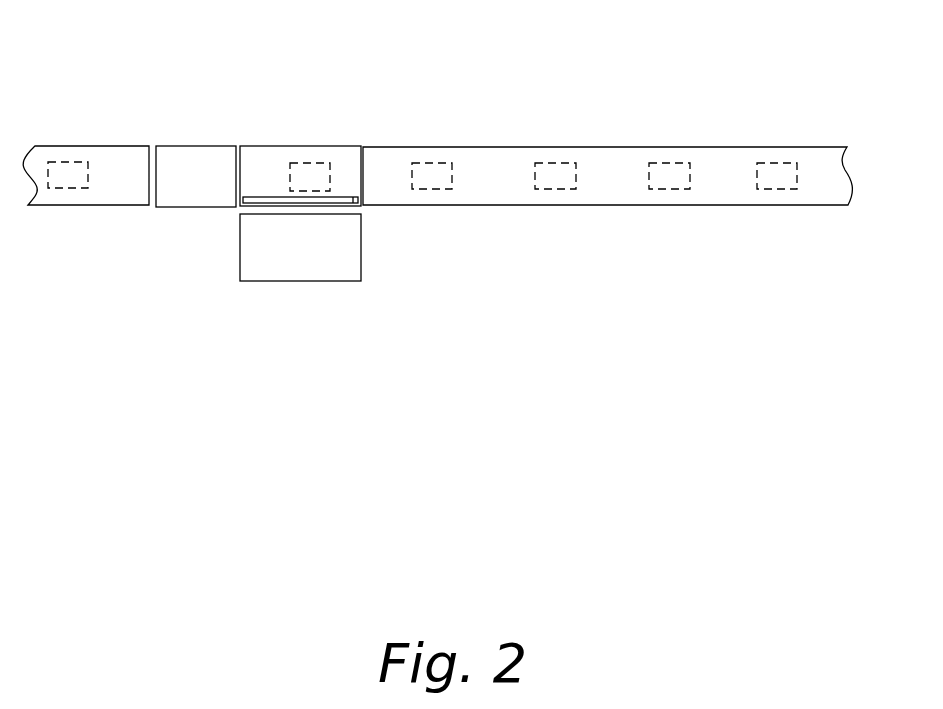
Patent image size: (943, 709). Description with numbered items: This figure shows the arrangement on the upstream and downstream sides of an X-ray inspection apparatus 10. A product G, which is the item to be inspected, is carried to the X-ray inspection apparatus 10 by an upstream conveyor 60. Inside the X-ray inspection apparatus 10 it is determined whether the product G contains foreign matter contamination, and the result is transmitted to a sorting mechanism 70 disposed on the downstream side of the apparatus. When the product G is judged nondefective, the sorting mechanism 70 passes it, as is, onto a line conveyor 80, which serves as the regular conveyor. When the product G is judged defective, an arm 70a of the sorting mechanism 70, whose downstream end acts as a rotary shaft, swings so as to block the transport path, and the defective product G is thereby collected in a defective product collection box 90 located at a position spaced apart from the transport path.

The upstream conveyor 60 is at (120, 163).
The product G is at (66, 190).
The X-ray inspection apparatus 10 is at (202, 163).
The sorting mechanism 70 is at (279, 153).
The arm 70a is at (265, 200).
The defective product collection box 90 is at (325, 265).
The line conveyor 80 is at (622, 193).